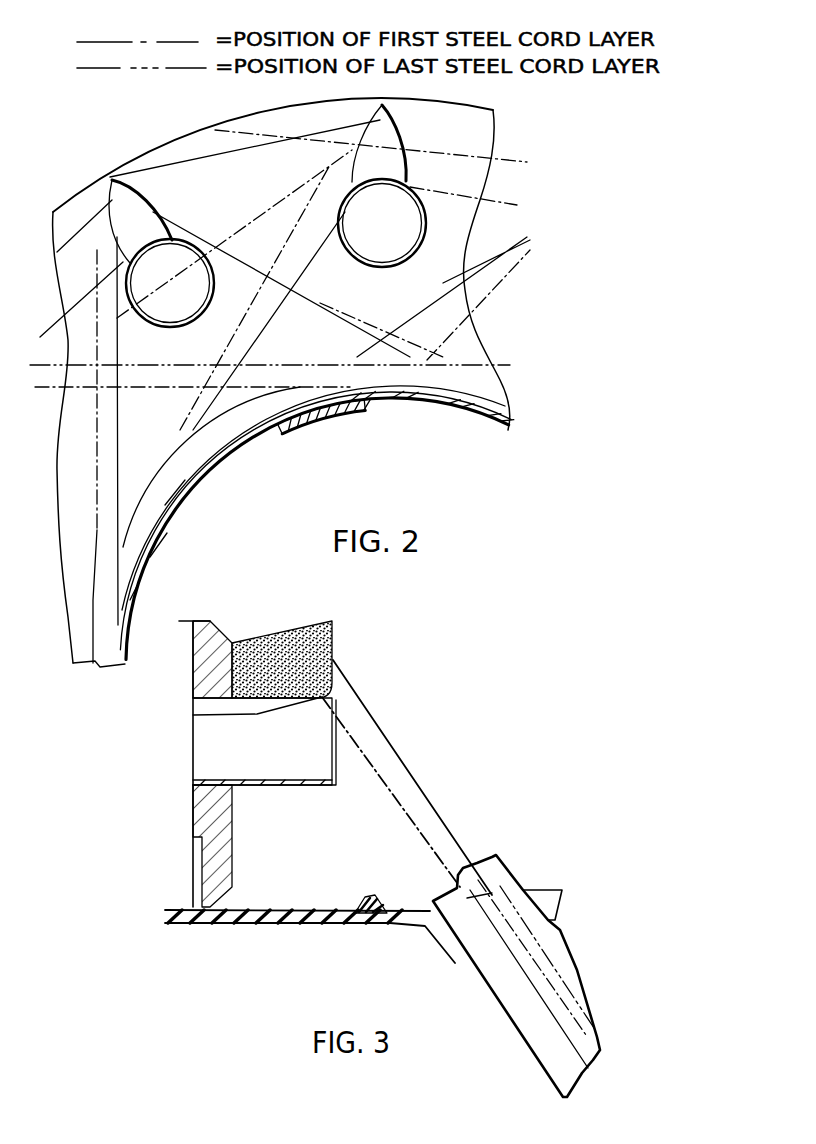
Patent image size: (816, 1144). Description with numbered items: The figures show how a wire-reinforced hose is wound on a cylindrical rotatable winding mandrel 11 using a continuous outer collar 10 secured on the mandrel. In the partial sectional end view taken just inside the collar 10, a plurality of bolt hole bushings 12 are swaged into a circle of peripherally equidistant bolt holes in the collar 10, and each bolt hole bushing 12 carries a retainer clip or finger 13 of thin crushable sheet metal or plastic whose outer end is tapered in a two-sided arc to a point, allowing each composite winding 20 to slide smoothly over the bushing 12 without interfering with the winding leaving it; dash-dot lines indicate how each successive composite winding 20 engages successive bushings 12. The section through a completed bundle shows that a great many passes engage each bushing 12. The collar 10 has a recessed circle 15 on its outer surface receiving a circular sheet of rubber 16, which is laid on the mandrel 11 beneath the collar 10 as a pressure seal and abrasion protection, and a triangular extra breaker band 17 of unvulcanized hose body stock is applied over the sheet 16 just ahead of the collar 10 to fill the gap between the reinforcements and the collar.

In FIG. 2, the outer collar 10 is at (255, 113).
In FIG. 3, the outer collar 10 is at (232, 868).
In FIG. 2, the winding mandrel 11 is at (345, 415).
In FIG. 2, the bolt hole bushing 12 is at (157, 327).
In FIG. 3, the bolt hole bushing 12 is at (267, 785).
In FIG. 3, the retainer clip or finger 13 is at (330, 675).
In FIG. 3, the recessed circle 15 is at (195, 875).
In FIG. 2, the circular sheet of rubber 16 is at (400, 405).
In FIG. 3, the circular sheet of rubber 16 is at (323, 908).
In FIG. 3, the extra breaker band 17 is at (360, 897).
In FIG. 2, the composite winding 20 is at (107, 425).